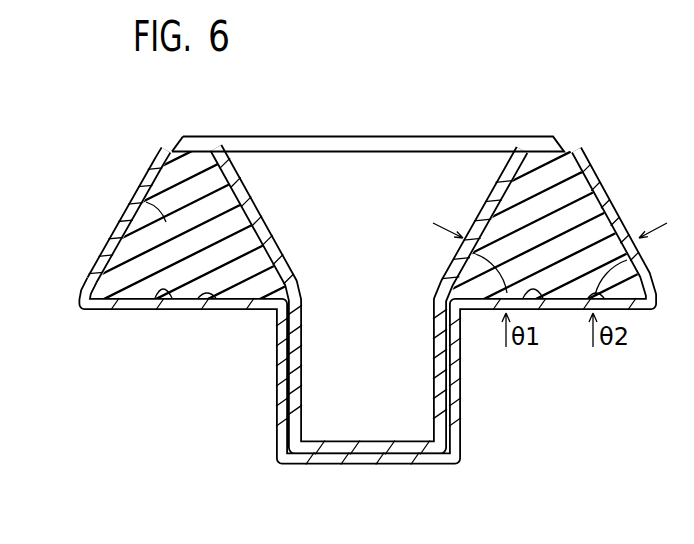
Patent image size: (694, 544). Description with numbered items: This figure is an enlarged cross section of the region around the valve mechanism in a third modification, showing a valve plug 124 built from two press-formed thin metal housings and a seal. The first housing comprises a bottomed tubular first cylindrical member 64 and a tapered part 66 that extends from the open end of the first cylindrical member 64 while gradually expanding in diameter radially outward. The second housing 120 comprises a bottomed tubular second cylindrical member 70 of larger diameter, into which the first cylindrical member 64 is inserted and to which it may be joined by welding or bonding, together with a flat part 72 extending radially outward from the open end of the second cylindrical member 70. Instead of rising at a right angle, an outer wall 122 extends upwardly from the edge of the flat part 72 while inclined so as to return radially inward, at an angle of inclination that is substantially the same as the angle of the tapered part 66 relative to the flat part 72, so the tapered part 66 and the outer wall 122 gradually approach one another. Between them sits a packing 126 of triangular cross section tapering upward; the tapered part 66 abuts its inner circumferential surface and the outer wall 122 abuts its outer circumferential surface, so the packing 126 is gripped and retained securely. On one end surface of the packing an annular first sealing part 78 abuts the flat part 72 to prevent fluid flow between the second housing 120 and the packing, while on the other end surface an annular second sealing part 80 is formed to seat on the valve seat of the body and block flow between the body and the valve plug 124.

The first cylindrical member 64 is at (353, 443).
The tapered part 66 is at (257, 212).
The second cylindrical member 70 is at (391, 463).
The flat part 72 is at (568, 311).
The first sealing part 78 is at (184, 312).
The second sealing part 80 is at (181, 136).
The second housing 120 is at (130, 326).
The outer wall 122 is at (606, 203).
The valve plug 124 is at (576, 122).
The packing 126 is at (158, 208).